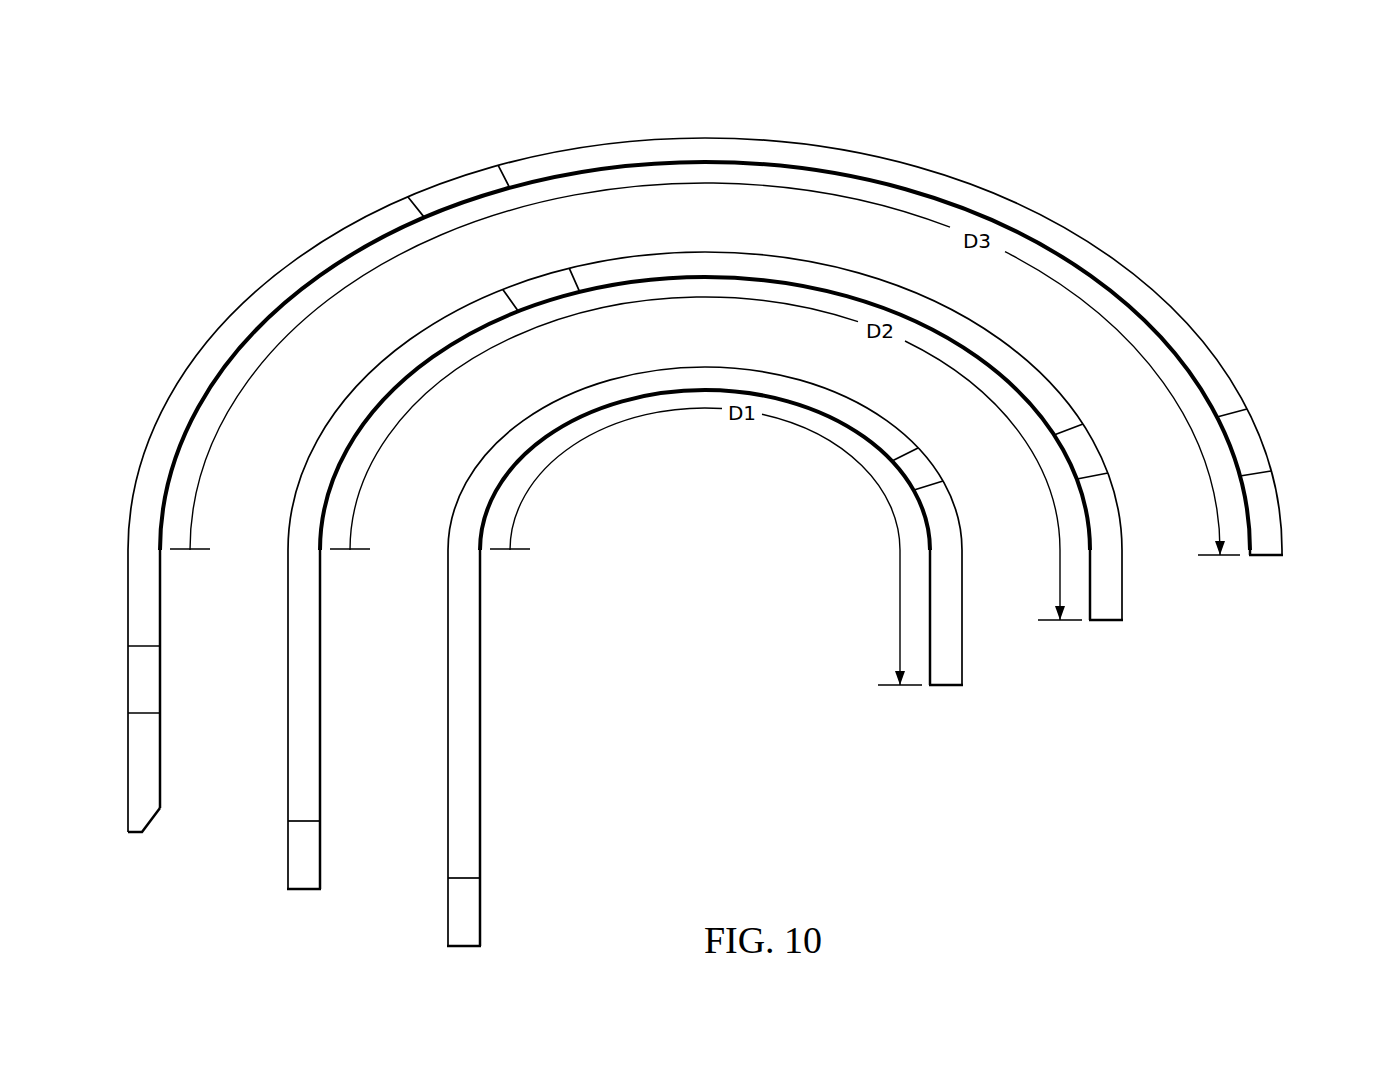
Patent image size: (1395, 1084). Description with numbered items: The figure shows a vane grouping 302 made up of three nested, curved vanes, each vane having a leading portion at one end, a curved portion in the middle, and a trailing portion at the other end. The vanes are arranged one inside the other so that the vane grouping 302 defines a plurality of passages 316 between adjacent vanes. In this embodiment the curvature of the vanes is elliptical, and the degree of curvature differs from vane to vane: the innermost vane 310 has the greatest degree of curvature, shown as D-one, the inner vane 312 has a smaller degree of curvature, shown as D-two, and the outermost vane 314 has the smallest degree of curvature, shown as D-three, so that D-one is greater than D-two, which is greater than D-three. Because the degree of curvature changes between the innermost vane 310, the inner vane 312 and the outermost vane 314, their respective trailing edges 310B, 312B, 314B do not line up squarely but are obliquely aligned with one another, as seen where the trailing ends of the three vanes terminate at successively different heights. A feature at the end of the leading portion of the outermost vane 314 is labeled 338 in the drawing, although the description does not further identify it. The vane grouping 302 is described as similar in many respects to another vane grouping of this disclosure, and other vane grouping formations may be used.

The vane grouping 302 is at (1036, 104).
The innermost vane 310 is at (480, 690).
The trailing edge of innermost vane 310B is at (945, 688).
The inner vane 312 is at (320, 657).
The trailing edge of inner vane 312B is at (1105, 623).
The outermost vane 314 is at (160, 609).
The trailing edge of outermost vane 314B is at (1265, 557).
The passages 316 is at (615, 238).
The chamfered end 338 is at (152, 836).